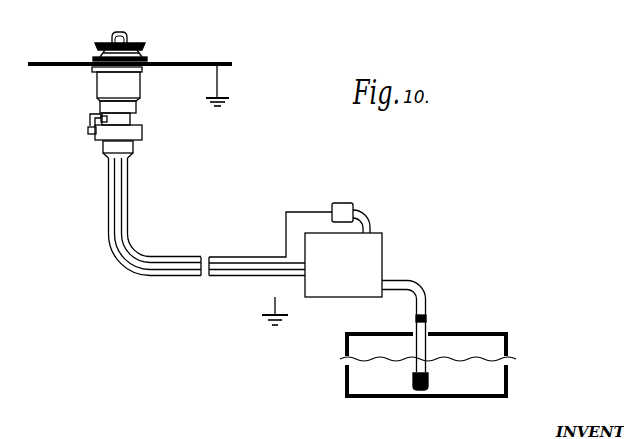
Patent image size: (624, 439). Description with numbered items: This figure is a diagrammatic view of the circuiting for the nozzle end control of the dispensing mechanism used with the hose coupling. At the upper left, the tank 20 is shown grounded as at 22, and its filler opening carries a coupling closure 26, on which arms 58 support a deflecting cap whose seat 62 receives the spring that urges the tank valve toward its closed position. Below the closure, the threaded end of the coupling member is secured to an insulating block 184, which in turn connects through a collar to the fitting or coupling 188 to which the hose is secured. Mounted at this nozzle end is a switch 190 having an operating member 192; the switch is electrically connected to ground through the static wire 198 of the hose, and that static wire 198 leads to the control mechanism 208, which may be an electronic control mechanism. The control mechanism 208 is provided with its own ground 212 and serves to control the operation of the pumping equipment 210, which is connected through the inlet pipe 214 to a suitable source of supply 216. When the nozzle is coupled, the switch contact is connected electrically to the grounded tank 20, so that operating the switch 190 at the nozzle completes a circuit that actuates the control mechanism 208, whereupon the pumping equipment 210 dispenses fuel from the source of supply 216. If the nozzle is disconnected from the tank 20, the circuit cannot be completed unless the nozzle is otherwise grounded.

The tank 20 is at (204, 62).
The ground 22 is at (217, 85).
The coupling closure 26 is at (92, 57).
The arms 58 is at (146, 54).
The seat of the cap 62 is at (126, 34).
The insulating block 184 is at (143, 133).
The fitting or coupling 188 is at (128, 183).
The switch 190 is at (88, 134).
The operating member 192 is at (90, 116).
The static wire 198 is at (109, 218).
The control mechanism 208 is at (343, 203).
The pumping equipment 210 is at (378, 243).
The ground 212 is at (273, 301).
The inlet pipe 214 is at (421, 284).
The source of supply 216 is at (510, 340).